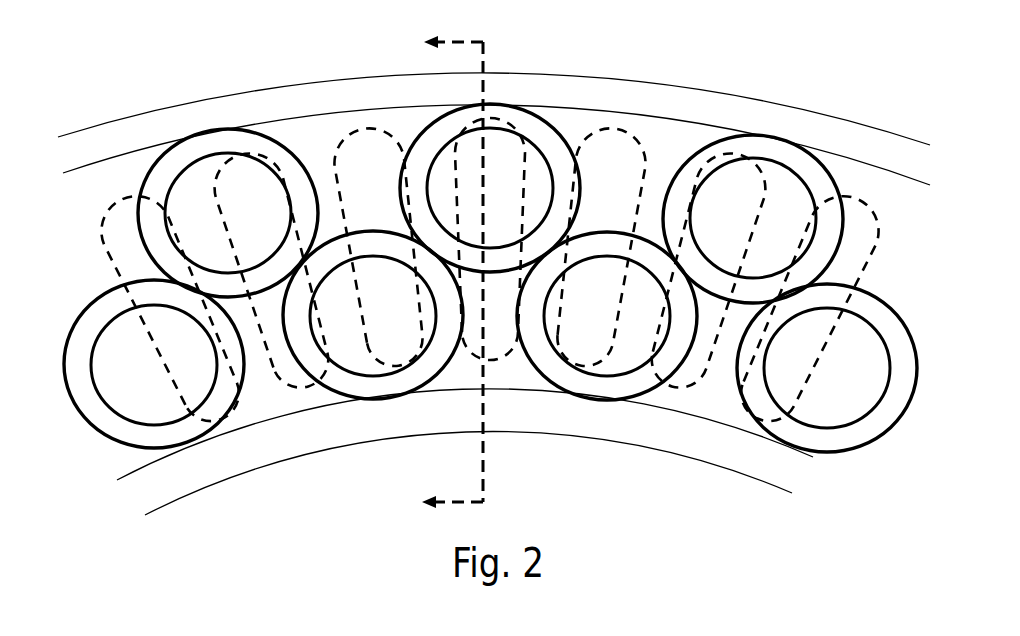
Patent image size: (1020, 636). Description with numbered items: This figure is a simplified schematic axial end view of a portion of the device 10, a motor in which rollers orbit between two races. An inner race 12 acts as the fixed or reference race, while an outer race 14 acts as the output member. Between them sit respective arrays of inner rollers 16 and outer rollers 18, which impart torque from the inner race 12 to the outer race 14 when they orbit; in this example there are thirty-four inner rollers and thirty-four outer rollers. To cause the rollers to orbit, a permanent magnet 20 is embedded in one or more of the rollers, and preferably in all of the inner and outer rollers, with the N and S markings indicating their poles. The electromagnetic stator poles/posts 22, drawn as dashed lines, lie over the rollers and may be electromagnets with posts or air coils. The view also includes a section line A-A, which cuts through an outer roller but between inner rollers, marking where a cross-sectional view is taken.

The device 10 is at (271, 62).
The inner race 12 is at (753, 457).
The outer race 14 is at (585, 83).
The inner rollers 16 is at (848, 442).
The outer rollers 18 is at (787, 157).
The permanent magnet 20 is at (465, 163).
The electromagnetic stator poles/posts 22 is at (118, 195).